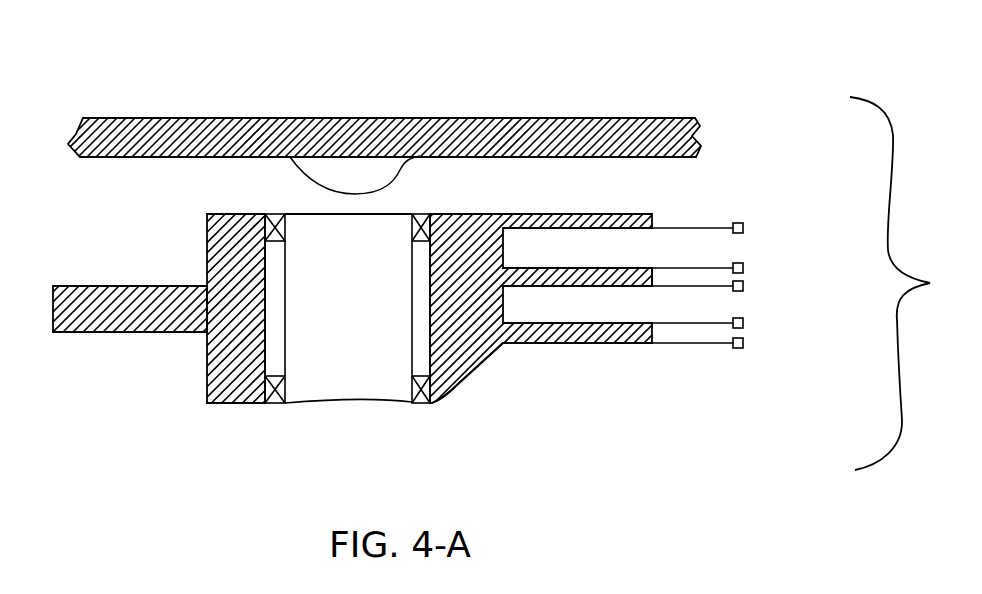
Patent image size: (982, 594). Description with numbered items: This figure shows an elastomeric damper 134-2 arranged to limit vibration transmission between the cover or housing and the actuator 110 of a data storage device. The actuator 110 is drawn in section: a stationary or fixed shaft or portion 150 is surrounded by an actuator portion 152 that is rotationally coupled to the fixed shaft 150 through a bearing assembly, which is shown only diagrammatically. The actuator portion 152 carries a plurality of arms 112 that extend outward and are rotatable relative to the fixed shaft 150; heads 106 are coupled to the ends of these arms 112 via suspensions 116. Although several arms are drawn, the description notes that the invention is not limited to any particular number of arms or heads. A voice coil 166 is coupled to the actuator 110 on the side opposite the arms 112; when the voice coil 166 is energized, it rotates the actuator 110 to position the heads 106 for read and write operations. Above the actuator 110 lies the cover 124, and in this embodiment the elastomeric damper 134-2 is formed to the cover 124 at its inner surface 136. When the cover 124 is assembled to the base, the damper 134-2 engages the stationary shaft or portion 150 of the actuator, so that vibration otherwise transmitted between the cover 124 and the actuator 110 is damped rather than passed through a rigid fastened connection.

The heads 106 is at (745, 226).
The actuator 110 is at (460, 212).
The arms 112 is at (565, 268).
The suspensions 116 is at (692, 268).
The cover 124 is at (550, 118).
The elastomeric damper 134-2 is at (352, 173).
The inner surface 136 is at (560, 157).
The stationary shaft or portion 150 is at (380, 332).
The actuator portion 152 is at (472, 380).
The voice coil 166 is at (128, 298).